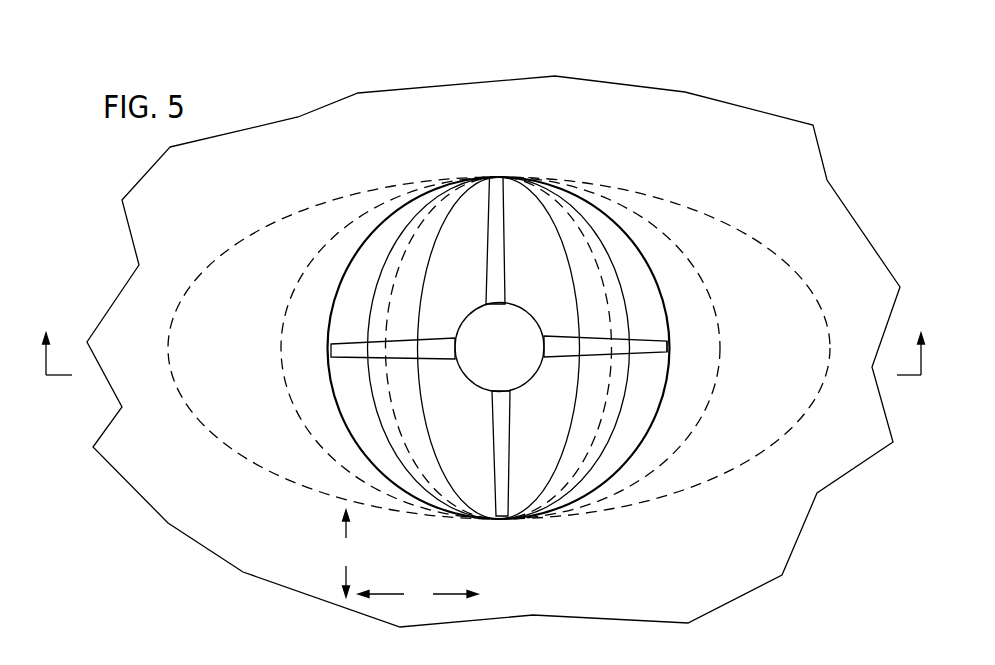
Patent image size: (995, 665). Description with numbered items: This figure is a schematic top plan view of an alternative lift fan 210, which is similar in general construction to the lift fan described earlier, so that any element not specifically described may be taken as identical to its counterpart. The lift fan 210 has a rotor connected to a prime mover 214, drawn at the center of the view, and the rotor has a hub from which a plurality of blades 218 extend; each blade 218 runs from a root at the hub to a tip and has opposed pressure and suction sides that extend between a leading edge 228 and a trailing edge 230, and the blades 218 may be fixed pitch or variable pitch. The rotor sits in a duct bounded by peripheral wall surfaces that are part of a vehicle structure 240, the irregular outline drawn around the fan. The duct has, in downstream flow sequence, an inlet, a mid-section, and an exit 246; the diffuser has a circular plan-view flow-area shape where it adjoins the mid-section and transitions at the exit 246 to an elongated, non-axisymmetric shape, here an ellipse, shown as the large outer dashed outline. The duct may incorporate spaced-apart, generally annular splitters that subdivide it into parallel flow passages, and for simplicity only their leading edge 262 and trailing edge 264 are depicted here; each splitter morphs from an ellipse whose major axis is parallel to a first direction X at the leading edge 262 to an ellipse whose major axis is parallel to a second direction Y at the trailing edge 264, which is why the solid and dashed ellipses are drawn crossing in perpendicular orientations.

The lift fan 210 is at (659, 72).
The prime mover 214 is at (523, 361).
The blades 218 is at (502, 518).
The leading edge 228 is at (657, 358).
The trailing edge 230 is at (657, 358).
The vehicle structure 240 is at (770, 573).
The exit 246 is at (775, 244).
The leading edge 262 is at (590, 227).
The trailing edge 264 is at (627, 183).